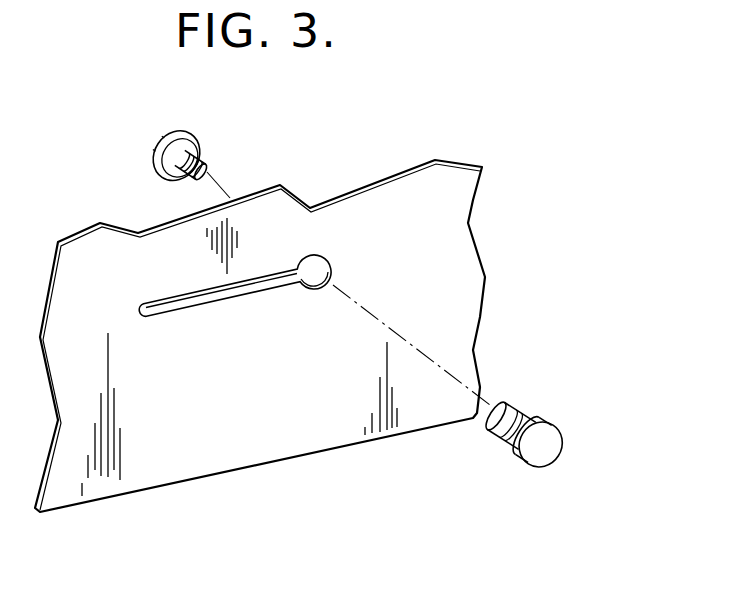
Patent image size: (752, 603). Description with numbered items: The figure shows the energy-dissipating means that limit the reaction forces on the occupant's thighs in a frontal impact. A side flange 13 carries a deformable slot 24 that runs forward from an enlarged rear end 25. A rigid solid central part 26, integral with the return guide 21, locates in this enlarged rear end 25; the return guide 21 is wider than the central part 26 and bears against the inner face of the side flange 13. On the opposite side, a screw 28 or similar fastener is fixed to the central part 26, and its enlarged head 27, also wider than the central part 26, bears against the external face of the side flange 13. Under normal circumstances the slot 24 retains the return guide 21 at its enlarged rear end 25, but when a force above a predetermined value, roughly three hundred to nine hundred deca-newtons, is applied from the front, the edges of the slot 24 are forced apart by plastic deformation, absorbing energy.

The side flange 13 is at (470, 183).
The return guide 21 is at (543, 437).
The deformable slot 24 is at (190, 303).
The enlarged rear end 25 is at (310, 265).
The central part 26 is at (510, 403).
The enlarged head 27 is at (183, 140).
The screw 28 is at (205, 160).